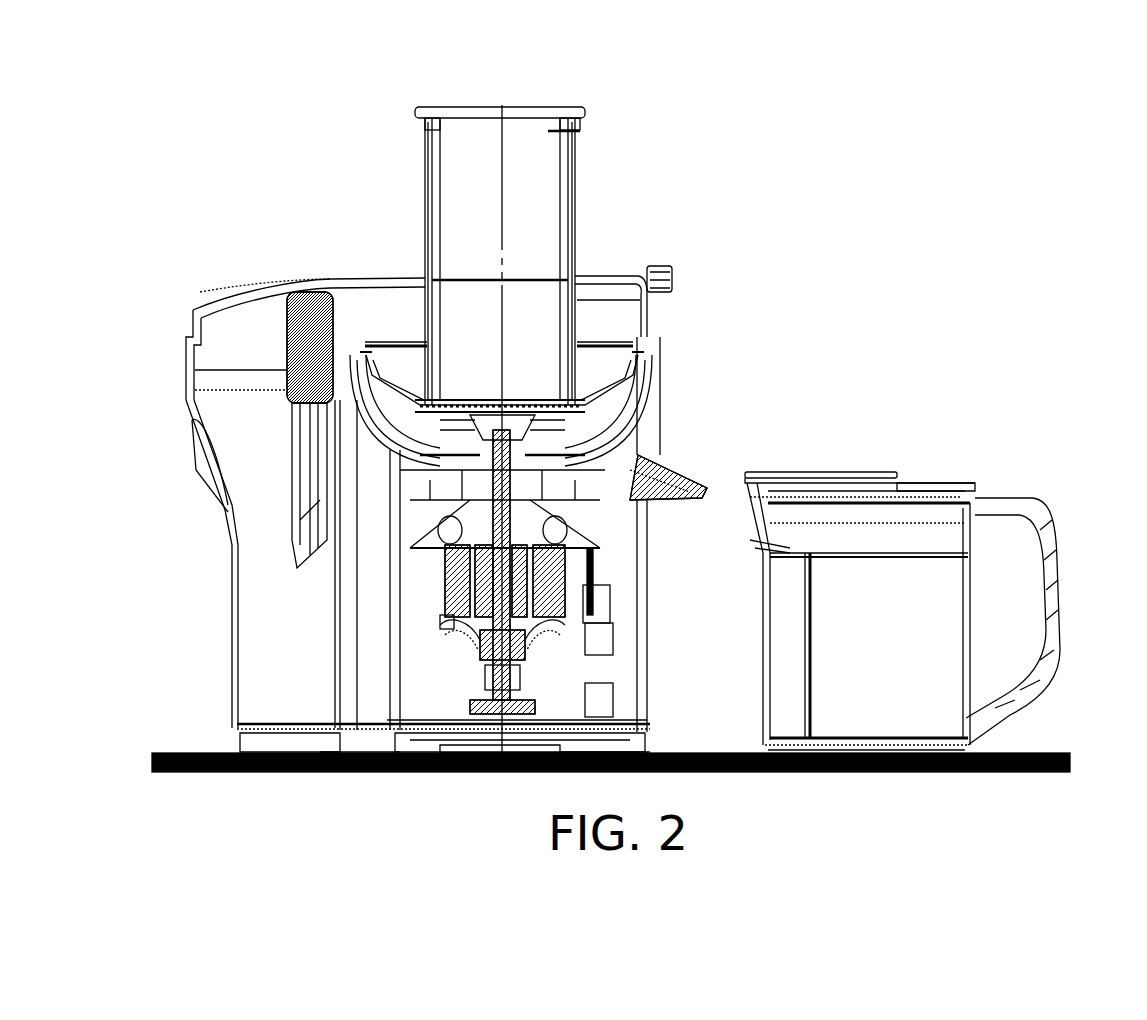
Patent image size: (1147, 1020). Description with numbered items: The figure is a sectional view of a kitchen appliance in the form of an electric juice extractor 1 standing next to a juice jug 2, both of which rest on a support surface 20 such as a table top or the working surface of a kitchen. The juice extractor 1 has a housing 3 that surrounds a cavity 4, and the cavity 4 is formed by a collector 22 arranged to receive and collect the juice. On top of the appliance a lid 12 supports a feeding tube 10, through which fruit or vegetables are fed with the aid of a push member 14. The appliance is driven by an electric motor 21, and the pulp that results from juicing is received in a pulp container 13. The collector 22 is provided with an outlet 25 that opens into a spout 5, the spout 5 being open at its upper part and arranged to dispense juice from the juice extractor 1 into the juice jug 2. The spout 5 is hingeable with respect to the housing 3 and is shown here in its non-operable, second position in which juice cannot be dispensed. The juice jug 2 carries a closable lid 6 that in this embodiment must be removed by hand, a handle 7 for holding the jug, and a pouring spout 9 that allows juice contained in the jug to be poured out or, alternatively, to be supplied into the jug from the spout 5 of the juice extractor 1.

The juice extractor 1 is at (222, 243).
The juice jug 2 is at (902, 558).
The housing 3 is at (645, 668).
The cavity 4 is at (388, 405).
The spout 5 is at (675, 462).
The lid 6 is at (808, 485).
The handle 7 is at (1058, 615).
The pouring spout 9 is at (745, 512).
The feeding tube 10 is at (430, 165).
The lid 12 is at (612, 275).
The pulp container 13 is at (237, 612).
The push member 14 is at (552, 163).
The support surface 20 is at (172, 753).
The electric motor 21 is at (495, 582).
The collector 22 is at (373, 433).
The outlet 25 is at (600, 468).